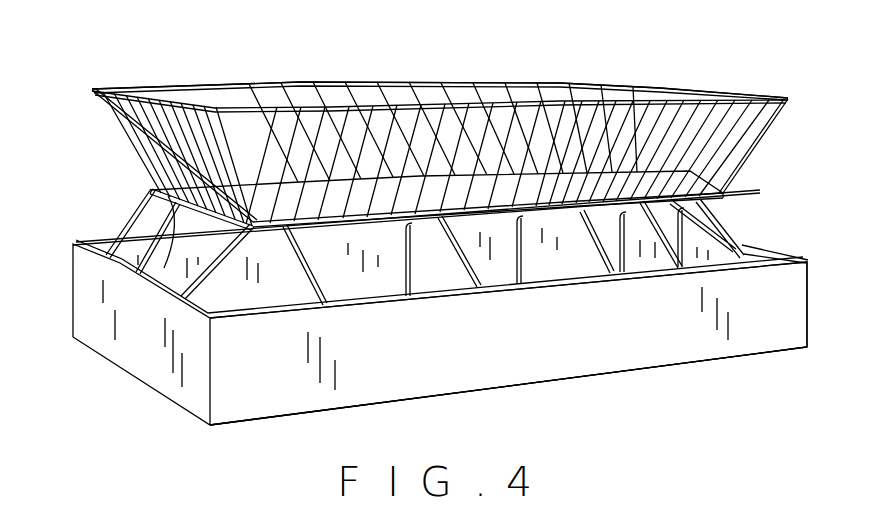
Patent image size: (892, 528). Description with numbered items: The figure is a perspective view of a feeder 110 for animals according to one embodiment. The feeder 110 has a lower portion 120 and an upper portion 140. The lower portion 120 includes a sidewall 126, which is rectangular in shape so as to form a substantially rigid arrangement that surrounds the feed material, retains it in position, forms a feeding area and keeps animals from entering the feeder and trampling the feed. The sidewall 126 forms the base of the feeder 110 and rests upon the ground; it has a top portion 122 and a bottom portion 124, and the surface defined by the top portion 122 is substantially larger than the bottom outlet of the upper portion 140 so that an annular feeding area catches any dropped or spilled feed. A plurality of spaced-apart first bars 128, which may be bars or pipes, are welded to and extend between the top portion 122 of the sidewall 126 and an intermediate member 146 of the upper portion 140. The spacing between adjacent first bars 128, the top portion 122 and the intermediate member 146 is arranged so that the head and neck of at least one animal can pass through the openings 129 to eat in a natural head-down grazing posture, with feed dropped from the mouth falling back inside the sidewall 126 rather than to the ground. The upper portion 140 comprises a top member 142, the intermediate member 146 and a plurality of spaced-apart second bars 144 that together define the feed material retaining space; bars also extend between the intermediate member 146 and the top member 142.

The feeder 110 is at (675, 40).
The lower portion 120 is at (56, 283).
The top portion 122 is at (773, 247).
The bottom portion 124 is at (518, 386).
The sidewall 126 is at (795, 315).
The first bars 128 is at (150, 217).
The openings 129 is at (198, 295).
The upper portion 140 is at (105, 156).
The top member 142 is at (510, 82).
The second bars 144 is at (763, 118).
The intermediate member 146 is at (727, 188).